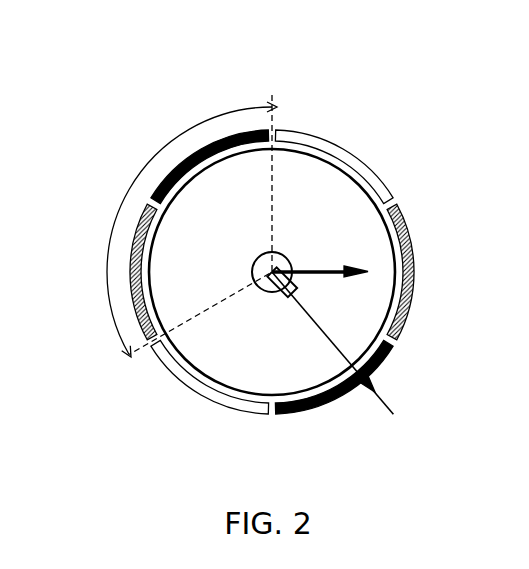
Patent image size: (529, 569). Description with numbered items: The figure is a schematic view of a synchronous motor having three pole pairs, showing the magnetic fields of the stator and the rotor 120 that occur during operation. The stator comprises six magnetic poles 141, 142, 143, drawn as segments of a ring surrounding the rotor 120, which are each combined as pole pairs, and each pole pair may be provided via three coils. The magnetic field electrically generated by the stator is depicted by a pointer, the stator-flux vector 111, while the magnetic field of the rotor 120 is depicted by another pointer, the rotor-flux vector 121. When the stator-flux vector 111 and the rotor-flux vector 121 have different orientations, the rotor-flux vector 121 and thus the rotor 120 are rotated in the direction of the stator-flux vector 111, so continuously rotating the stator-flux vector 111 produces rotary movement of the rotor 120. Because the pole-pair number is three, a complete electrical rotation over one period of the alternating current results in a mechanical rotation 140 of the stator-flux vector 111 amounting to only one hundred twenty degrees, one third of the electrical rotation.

The stator-flux vector 111 is at (330, 268).
The rotor 120 is at (254, 262).
The rotor-flux vector 121 is at (305, 310).
The mechanical rotation 140 is at (132, 182).
The magnetic pole 141 is at (348, 158).
The magnetic pole 142 is at (128, 271).
The magnetic pole 143 is at (210, 145).